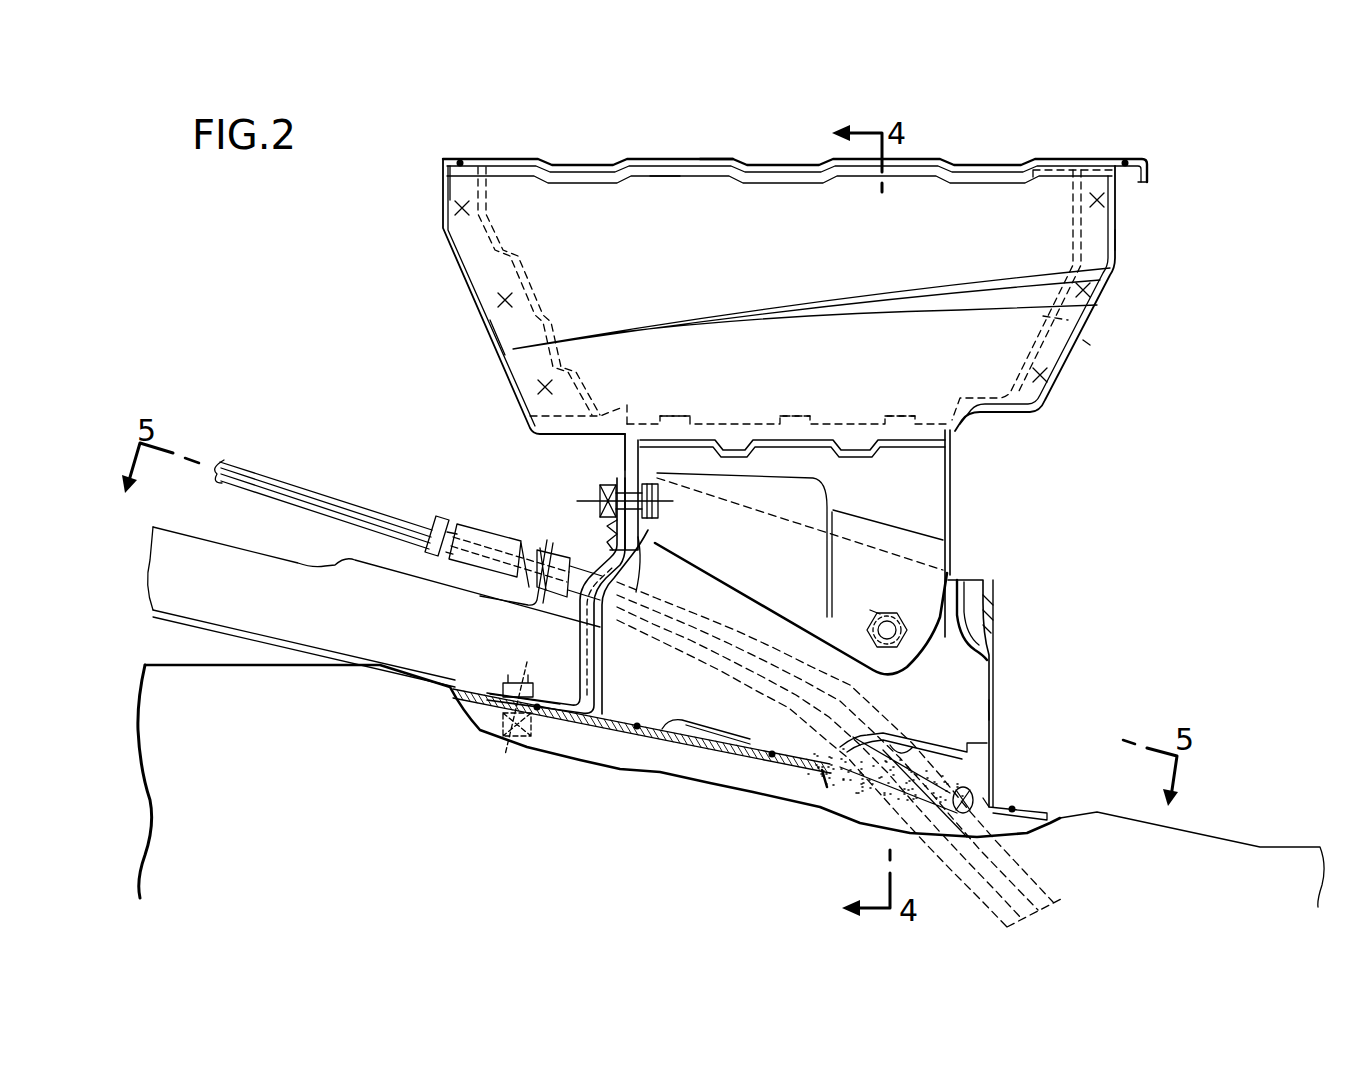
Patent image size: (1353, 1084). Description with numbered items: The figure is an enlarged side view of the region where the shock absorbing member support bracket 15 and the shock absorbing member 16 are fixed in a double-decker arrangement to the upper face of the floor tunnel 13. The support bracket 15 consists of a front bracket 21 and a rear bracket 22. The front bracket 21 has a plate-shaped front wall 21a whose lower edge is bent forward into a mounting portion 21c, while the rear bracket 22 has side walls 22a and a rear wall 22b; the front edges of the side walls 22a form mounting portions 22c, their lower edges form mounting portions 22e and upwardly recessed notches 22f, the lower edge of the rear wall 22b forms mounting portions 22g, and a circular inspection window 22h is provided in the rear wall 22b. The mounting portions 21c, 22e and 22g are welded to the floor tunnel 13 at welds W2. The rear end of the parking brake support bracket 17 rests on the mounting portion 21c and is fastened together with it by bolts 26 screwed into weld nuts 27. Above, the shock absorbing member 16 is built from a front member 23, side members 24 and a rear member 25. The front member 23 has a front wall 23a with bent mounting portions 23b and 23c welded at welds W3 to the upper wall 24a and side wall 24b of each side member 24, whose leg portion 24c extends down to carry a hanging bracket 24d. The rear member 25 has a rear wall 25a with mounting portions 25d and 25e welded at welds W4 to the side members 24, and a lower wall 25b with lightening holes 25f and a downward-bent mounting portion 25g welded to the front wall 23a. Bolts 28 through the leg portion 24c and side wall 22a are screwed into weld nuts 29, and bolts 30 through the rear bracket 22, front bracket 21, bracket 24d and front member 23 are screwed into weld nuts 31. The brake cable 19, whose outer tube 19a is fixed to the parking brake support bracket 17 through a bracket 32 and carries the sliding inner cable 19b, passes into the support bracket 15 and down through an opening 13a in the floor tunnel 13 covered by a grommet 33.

The floor tunnel 13 is at (170, 655).
The opening 13a is at (950, 780).
The shock absorbing member support bracket 15 is at (1035, 677).
The shock absorbing member 16 is at (1138, 256).
The parking brake support bracket 17 is at (345, 565).
The brake cable 19 is at (488, 520).
The outer tube 19a is at (455, 528).
The inner cable 19b is at (298, 475).
The front bracket 21 is at (570, 622).
The front wall 21a is at (602, 565).
The mounting portion 21c is at (503, 705).
The rear bracket 22 is at (1005, 708).
The side wall 22a is at (737, 748).
The rear wall 22b is at (993, 612).
The mounting portion 22c is at (645, 595).
The mounting portion 22e is at (700, 728).
The notch 22f is at (890, 745).
The mounting portion 22g is at (1020, 805).
The inspection window 22h is at (995, 630).
The front member 23 is at (527, 262).
The front wall 23a is at (617, 473).
The mounting portion 23b is at (496, 338).
The mounting portion 23c is at (465, 182).
The side member 24 is at (607, 150).
The upper wall 24a is at (713, 157).
The side wall 24b is at (666, 197).
The leg portion 24c is at (935, 487).
The bracket 24d is at (655, 460).
The rear member 25 is at (1110, 286).
The rear wall 25a is at (1070, 320).
The lower wall 25b is at (793, 420).
The mounting portion 25d is at (1135, 178).
The mounting portion 25e is at (1085, 344).
The lightening hole 25f is at (688, 420).
The mounting portion 25g is at (625, 432).
The bolt 26 is at (506, 681).
The weld nut 27 is at (523, 740).
The bolt 28 is at (900, 638).
The weld nut 29 is at (870, 610).
The bolt 30 is at (659, 518).
The weld nut 31 is at (600, 486).
The bracket 32 is at (530, 540).
The grommet 33 is at (850, 790).
The weld W2 is at (634, 729).
The weld W3 is at (458, 160).
The weld W4 is at (1127, 160).